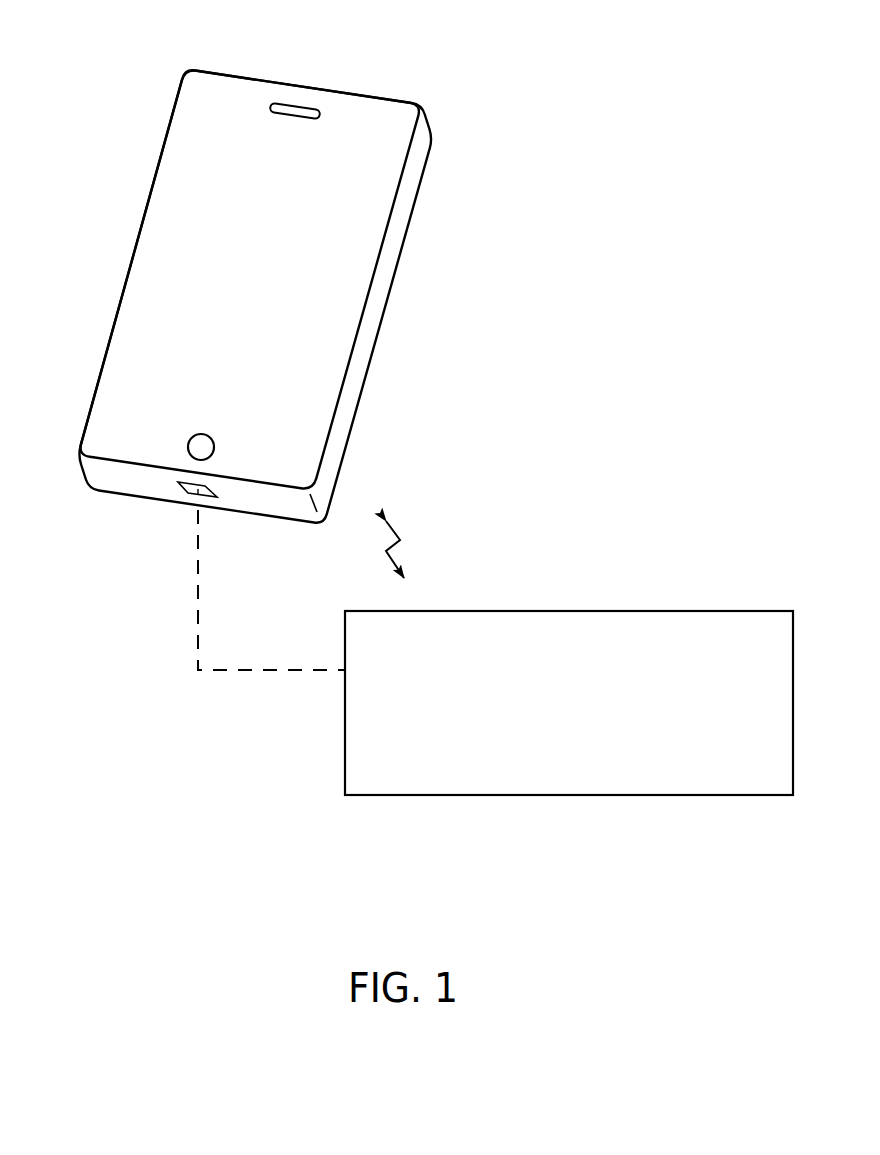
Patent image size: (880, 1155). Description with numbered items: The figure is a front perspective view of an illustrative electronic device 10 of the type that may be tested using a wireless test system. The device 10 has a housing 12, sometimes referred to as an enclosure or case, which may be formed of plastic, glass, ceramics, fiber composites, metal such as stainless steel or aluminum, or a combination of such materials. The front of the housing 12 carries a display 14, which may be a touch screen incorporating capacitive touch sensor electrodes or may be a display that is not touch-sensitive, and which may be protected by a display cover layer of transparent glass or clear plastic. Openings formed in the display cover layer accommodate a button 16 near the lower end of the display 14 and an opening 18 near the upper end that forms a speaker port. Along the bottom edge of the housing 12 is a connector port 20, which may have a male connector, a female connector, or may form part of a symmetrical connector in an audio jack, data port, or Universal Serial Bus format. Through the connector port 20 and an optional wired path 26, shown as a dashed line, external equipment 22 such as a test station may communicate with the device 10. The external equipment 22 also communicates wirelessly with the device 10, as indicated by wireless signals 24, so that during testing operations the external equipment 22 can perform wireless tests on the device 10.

The electronic device 10 is at (260, 289).
The housing 12 is at (402, 245).
The display 14 is at (168, 255).
The button 16 is at (187, 447).
The opening 18 is at (292, 105).
The connector port 20 is at (180, 484).
The external equipment 22 is at (717, 609).
The wireless signals 24 is at (405, 539).
The wired path 26 is at (255, 672).